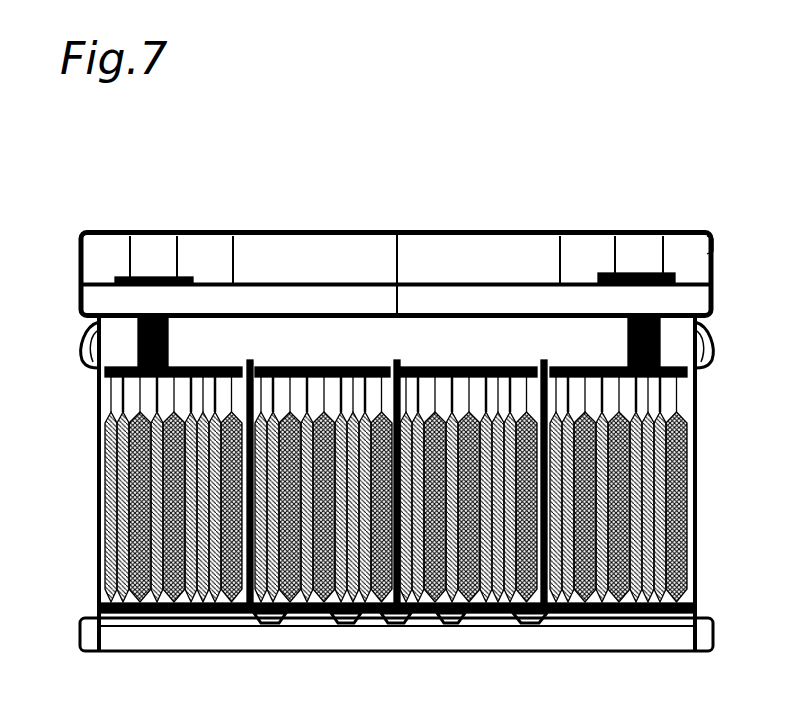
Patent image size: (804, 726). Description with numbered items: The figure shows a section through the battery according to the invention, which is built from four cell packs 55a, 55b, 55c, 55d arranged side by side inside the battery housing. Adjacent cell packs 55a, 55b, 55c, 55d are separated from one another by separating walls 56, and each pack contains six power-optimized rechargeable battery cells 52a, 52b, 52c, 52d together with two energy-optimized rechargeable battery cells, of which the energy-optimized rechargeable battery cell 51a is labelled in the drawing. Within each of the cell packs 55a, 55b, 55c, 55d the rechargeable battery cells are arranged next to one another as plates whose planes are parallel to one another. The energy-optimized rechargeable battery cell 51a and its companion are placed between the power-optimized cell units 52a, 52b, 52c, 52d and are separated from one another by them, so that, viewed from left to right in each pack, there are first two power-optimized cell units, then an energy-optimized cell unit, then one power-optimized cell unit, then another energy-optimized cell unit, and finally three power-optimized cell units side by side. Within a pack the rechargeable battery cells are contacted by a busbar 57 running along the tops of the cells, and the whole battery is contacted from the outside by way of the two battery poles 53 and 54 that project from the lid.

The energy-optimized rechargeable battery cell 51a is at (633, 570).
The power-optimized rechargeable battery cell 52a is at (683, 435).
The power-optimized rechargeable battery cell 52b is at (667, 482).
The power-optimized rechargeable battery cell 52c is at (653, 542).
The power-optimized rechargeable battery cell 52d is at (573, 620).
The battery pole 53 is at (655, 253).
The battery pole 54 is at (155, 257).
The cell pack 55a is at (127, 578).
The cell pack 55b is at (308, 626).
The cell pack 55c is at (470, 613).
The cell pack 55d is at (640, 402).
The separating wall 56 is at (250, 367).
The busbar 57 is at (313, 359).